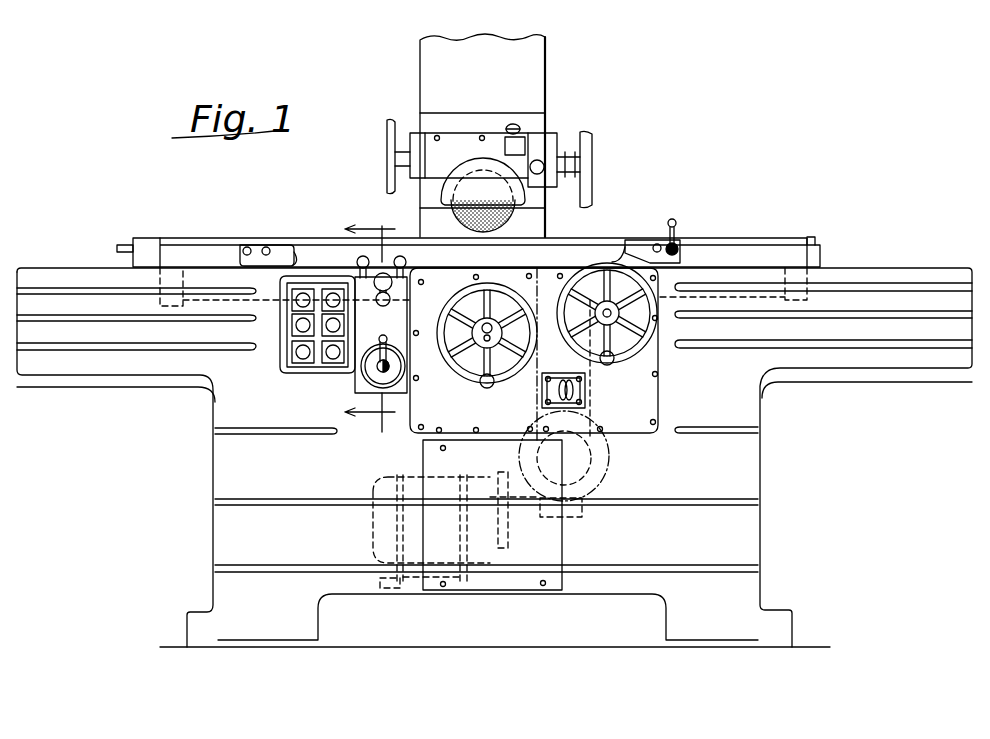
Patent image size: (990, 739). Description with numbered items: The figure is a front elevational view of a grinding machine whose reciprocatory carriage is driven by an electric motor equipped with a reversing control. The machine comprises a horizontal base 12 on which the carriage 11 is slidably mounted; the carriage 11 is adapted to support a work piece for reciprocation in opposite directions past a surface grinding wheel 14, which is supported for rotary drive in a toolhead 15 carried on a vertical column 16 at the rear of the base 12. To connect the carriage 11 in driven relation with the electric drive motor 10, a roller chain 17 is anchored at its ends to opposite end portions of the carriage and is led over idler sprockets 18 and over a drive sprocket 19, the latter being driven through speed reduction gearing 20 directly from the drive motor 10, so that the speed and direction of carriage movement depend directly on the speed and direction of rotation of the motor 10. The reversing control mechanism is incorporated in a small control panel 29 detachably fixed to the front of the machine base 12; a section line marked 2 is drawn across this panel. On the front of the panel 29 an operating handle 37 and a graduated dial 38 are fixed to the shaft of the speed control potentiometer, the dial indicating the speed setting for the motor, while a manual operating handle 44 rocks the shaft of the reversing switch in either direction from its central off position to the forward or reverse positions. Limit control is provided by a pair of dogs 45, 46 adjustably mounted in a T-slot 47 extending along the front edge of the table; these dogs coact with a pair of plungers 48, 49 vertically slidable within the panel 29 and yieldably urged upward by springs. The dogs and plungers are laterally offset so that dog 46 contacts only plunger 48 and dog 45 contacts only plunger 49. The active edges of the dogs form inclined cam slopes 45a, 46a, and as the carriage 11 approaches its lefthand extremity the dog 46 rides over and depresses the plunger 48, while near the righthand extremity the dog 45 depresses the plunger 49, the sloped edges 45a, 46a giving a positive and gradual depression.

The electric drive motor 10 is at (371, 484).
The reciprocatory carriage 11 is at (722, 238).
The horizontal base 12 is at (758, 465).
The surface grinding wheel 14 is at (502, 215).
The toolhead 15 is at (532, 135).
The vertical column 16 is at (545, 82).
The roller chain 17 is at (590, 396).
The idler sprockets 18 is at (527, 310).
The drive sprocket 19 is at (598, 462).
The speed reduction gearing 20 is at (595, 515).
The control panel 29 is at (414, 347).
The operating handle 37 is at (392, 338).
The graduated dial 38 is at (364, 378).
The manual operating handle 44 is at (375, 298).
The dog 45 is at (277, 248).
The inclined cam slope 45a is at (298, 254).
The dog 46 is at (643, 240).
The inclined cam slope 46a is at (612, 248).
The T-slot 47 is at (778, 238).
The plunger 48 is at (406, 262).
The plunger 49 is at (356, 266).
The section line 2- 2 is at (367, 319).